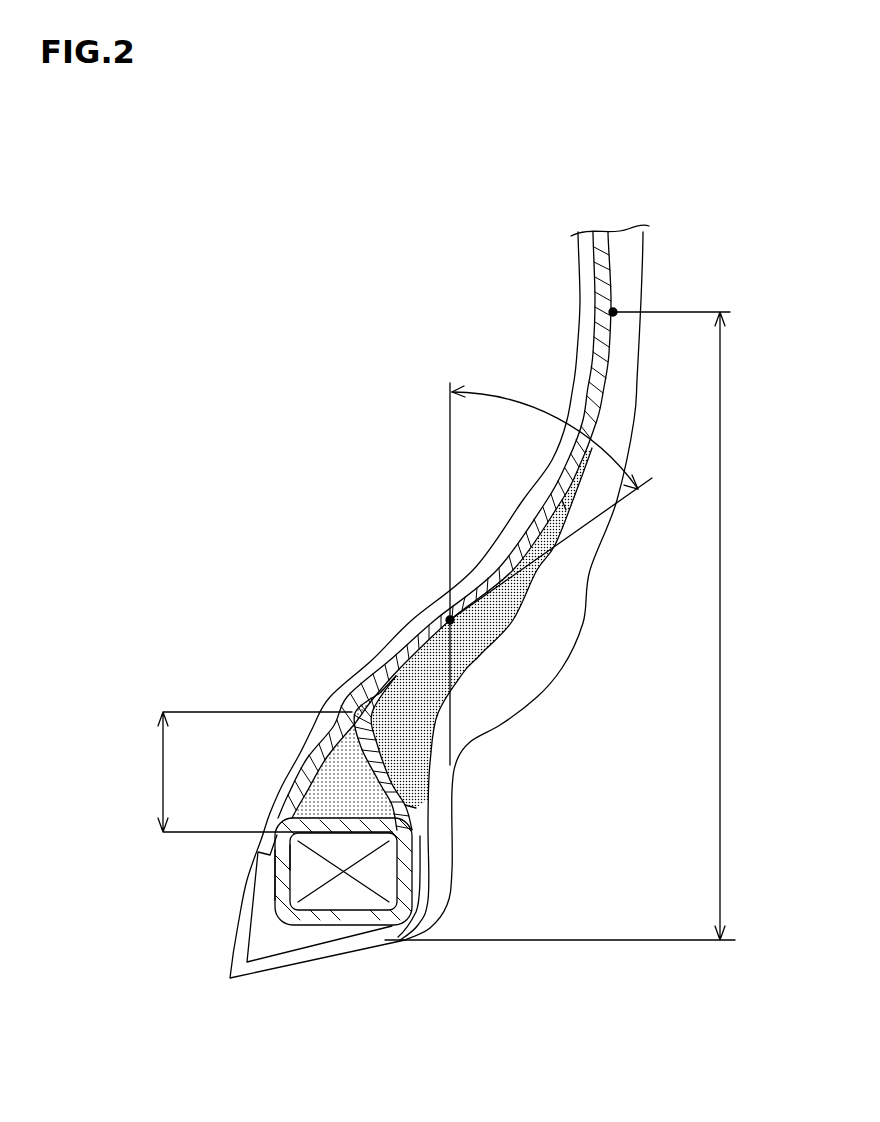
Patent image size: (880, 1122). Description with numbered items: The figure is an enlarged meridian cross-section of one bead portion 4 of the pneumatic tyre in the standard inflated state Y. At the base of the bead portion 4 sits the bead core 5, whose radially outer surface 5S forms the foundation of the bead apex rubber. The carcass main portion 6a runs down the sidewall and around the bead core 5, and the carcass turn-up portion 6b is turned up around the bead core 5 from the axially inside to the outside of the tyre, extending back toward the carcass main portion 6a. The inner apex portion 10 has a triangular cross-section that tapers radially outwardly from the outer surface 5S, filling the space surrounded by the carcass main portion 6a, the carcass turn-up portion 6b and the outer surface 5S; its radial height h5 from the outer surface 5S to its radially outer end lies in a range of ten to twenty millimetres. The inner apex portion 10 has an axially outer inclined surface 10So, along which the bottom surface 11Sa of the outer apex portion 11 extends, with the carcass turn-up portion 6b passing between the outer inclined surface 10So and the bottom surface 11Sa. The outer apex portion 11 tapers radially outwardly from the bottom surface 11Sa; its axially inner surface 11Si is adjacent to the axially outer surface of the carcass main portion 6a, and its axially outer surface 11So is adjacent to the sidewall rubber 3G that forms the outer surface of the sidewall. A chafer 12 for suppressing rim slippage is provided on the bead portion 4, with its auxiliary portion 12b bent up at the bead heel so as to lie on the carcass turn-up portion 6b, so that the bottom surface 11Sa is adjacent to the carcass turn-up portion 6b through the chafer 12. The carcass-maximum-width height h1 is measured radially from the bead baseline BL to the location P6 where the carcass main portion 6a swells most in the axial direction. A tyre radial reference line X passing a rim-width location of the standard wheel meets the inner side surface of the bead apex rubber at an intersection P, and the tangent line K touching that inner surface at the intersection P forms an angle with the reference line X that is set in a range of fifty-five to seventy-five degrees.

The sidewall rubber 3G is at (480, 707).
The bead portion 4 is at (180, 878).
The bead core 5 is at (291, 906).
The radially outer surface of the bead core 5S is at (320, 830).
The carcass main portion 6a is at (420, 632).
The carcass turn-up portion 6b is at (402, 805).
The inner apex portion 10 is at (271, 808).
The axially outer inclined surface 10So is at (276, 898).
The outer apex portion 11 is at (532, 694).
The axially inner surface of the outer apex portion 11Si is at (543, 553).
The axially outer surface of the outer apex portion 11So is at (548, 577).
The bottom surface of the outer apex portion 11Sa is at (392, 810).
The chafer 12 is at (270, 963).
The auxiliary portion of the chafer 12b is at (388, 700).
The intersection P is at (455, 620).
The carcass maximum width location P6 is at (615, 311).
The tangent line K is at (585, 534).
The tyre radial reference line X is at (450, 443).
The standard inflated state Y is at (360, 346).
The carcass-maximum-width height h1 is at (685, 626).
The radial height h5 is at (257, 772).
The bead baseline BL is at (560, 941).